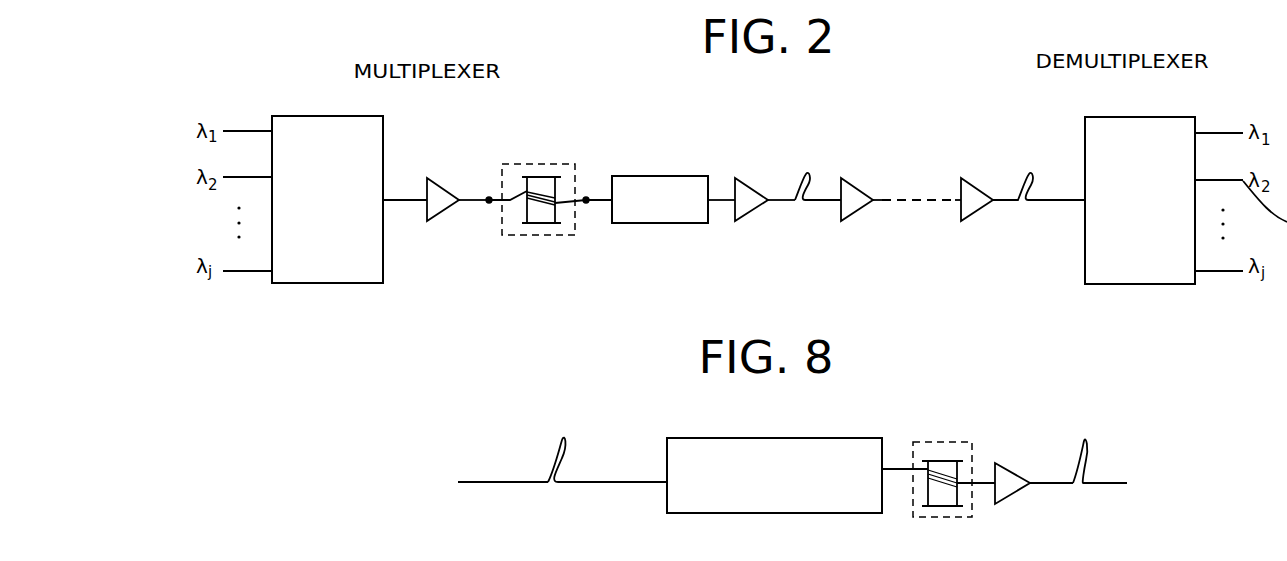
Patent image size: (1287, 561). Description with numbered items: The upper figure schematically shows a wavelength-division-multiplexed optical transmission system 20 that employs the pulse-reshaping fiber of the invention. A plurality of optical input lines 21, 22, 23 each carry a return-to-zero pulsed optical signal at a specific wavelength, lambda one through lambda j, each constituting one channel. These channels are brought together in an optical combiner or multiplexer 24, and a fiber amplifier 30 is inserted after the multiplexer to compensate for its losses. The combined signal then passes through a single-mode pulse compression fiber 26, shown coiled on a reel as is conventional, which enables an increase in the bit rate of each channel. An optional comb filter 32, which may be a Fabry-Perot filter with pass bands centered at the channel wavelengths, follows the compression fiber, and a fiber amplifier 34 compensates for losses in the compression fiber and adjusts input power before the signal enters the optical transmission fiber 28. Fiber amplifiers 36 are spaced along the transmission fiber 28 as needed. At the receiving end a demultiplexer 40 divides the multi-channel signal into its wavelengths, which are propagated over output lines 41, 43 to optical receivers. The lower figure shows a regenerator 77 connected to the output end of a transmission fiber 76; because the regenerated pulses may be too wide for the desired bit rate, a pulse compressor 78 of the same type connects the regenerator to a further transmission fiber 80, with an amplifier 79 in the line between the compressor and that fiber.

In FIG. 2, the optical transmission system 20 is at (603, 105).
In FIG. 2, the optical input line 21 is at (238, 129).
In FIG. 2, the optical input line 22 is at (236, 180).
In FIG. 2, the optical input line 23 is at (243, 272).
In FIG. 2, the multiplexer 24 is at (338, 116).
In FIG. 2, the pulse compression fiber 26 is at (538, 164).
In FIG. 2, the optical transmission fiber 28 is at (806, 174).
In FIG. 2, the fiber amplifier 30 is at (448, 187).
In FIG. 2, the comb filter 32 is at (640, 176).
In FIG. 2, the fiber amplifier 34 is at (757, 187).
In FIG. 2, the fiber amplifiers 36 is at (860, 186).
In FIG. 2, the demultiplexer 40 is at (1141, 117).
In FIG. 2, the output line 41 is at (1233, 133).
In FIG. 2, the output line 43 is at (1231, 272).
In FIG. 8, the transmission fiber 76 is at (552, 457).
In FIG. 8, the regenerator 77 is at (742, 438).
In FIG. 8, the pulse compressor 78 is at (944, 442).
In FIG. 8, the amplifier 79 is at (1018, 470).
In FIG. 8, the transmission fiber 80 is at (1092, 458).